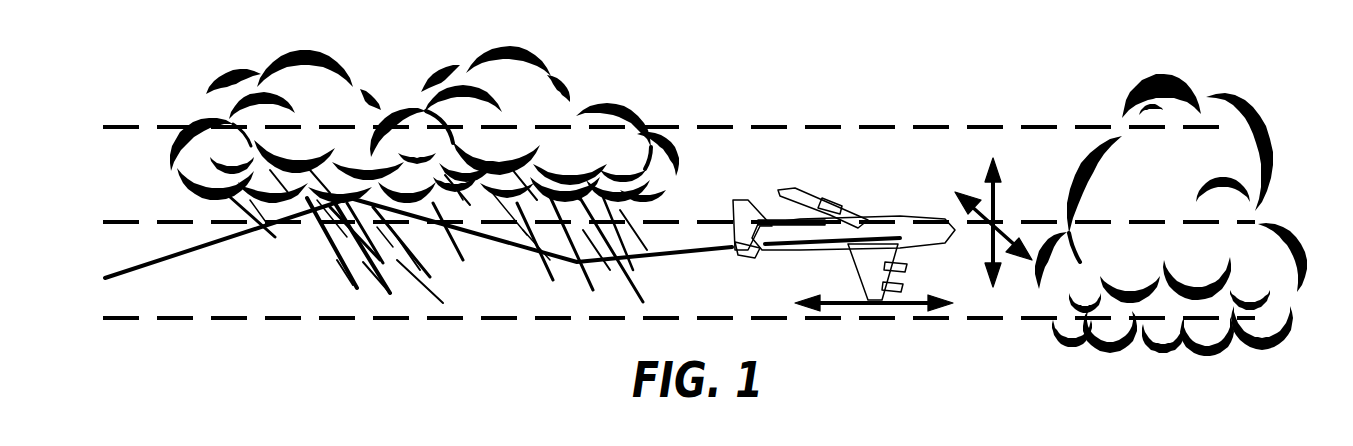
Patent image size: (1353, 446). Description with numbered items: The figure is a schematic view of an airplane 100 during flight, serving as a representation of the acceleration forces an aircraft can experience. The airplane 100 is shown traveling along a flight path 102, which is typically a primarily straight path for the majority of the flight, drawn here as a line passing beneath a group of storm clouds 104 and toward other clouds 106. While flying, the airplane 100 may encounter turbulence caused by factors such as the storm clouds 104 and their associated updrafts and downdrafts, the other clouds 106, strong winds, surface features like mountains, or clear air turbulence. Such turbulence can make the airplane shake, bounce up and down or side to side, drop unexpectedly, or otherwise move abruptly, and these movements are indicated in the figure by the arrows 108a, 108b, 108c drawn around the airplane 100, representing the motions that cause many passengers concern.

The airplane 100 is at (892, 222).
The flight path 102 is at (230, 248).
The storm clouds 104 is at (541, 60).
The other clouds 106 is at (1163, 104).
The arrow 108a is at (908, 307).
The arrow 108b is at (998, 253).
The arrow 108c is at (993, 188).